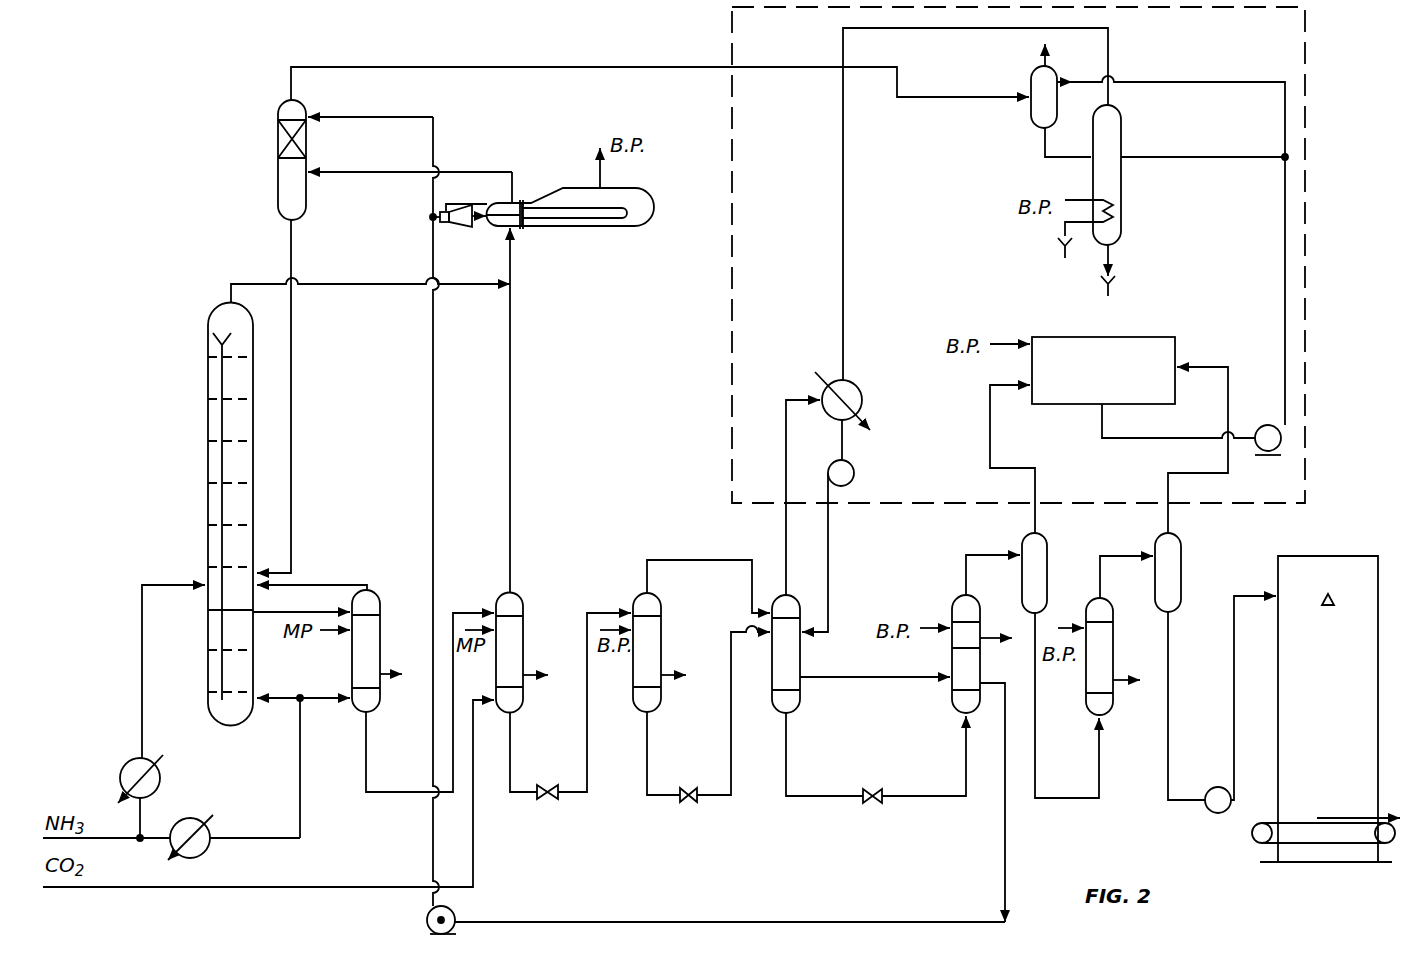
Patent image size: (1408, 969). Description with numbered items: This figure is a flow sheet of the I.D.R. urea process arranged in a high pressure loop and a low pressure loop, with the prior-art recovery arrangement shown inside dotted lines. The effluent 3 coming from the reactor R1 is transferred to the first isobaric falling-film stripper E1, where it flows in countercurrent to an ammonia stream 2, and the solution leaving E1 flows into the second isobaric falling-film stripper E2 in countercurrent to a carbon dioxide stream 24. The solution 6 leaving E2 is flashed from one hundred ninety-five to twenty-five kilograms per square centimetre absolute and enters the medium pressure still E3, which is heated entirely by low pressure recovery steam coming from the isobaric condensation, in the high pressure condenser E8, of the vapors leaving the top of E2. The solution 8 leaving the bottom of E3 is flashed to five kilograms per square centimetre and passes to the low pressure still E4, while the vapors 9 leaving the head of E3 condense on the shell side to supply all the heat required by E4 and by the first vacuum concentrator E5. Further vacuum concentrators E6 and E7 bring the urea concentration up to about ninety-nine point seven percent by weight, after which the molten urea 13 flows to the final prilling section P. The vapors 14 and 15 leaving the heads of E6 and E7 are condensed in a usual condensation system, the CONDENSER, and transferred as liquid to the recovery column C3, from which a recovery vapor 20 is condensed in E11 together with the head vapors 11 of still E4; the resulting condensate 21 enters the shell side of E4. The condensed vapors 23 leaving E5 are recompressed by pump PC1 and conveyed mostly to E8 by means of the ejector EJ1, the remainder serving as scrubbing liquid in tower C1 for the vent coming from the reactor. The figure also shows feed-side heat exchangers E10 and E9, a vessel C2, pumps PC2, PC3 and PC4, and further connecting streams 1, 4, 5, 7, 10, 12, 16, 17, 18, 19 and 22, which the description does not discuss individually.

The ammonia feed line 1 is at (106, 819).
The NH3 stream 2 is at (303, 754).
The effluent 3 is at (301, 599).
The return line to reactor 4 is at (312, 574).
The liquid line from E1 to E2 5 is at (430, 687).
The solution leaving E2 6 is at (570, 706).
The vapor line from E2 to ejector 7 is at (520, 410).
The solution leaving the bottom of E3 8 is at (708, 714).
The vapors leaving the head of E3 9 is at (708, 573).
The liquid line from E4 to E5 10 is at (876, 758).
The head vapors of the still E4 11 is at (793, 497).
The liquid line from E6 to E7 12 is at (1067, 705).
The molten urea 13 is at (1186, 706).
The vapors leaving the head of E6 14 is at (1012, 459).
The vapors leaving the head of E7 15 is at (1198, 450).
The condensate line from condenser 16 is at (1178, 421).
The bottoms line from C3 17 is at (1120, 270).
The line from C3 to pump PC3 18 is at (1203, 143).
The line from C2 to C3 19 is at (1068, 142).
The recovery vapor 20 is at (975, 204).
The condensate 21 is at (830, 552).
The line from C1 to C2 22 is at (660, 69).
The condensed vapors leaving E5 23 is at (746, 802).
The CO2 stream 24 is at (268, 809).
The reactor R1 is at (247, 514).
The tower C1 is at (312, 160).
The separator C2 is at (1059, 86).
The recovery column C3 is at (1106, 181).
The first isobaric stripper E1 is at (381, 651).
The second isobaric stripper E2 is at (525, 653).
The medium pressure still E3 is at (663, 652).
The low-pressure still E4 is at (802, 654).
The first vacuum concentrator E5 is at (982, 654).
The further vacuum concentrator E6 is at (1020, 573).
The final vacuum concentrator E7 is at (1116, 656).
The high pressure isobaric condenser E8 is at (542, 201).
The carbon dioxide heat exchanger E9 is at (234, 843).
The ammonia heat exchanger E10 is at (161, 779).
The condenser E11 is at (859, 401).
The ejector EJ1 is at (370, 281).
The pump PC1 is at (416, 920).
The pump PC2 is at (861, 453).
The pump PC3 is at (1255, 428).
The pump PC4 is at (1234, 721).
The final prilling section P is at (1326, 709).
The condenser CONDENSER is at (1103, 370).